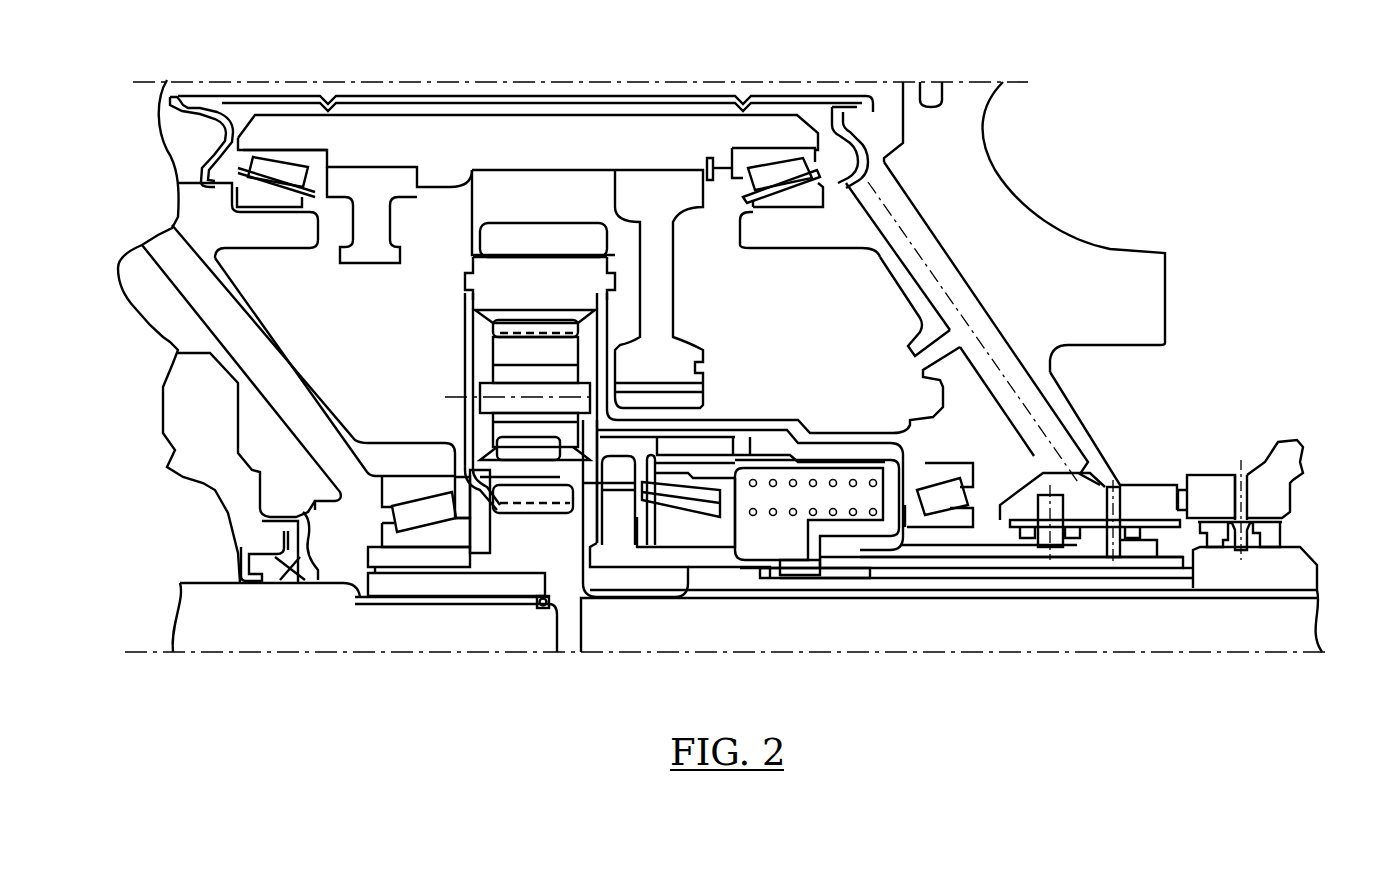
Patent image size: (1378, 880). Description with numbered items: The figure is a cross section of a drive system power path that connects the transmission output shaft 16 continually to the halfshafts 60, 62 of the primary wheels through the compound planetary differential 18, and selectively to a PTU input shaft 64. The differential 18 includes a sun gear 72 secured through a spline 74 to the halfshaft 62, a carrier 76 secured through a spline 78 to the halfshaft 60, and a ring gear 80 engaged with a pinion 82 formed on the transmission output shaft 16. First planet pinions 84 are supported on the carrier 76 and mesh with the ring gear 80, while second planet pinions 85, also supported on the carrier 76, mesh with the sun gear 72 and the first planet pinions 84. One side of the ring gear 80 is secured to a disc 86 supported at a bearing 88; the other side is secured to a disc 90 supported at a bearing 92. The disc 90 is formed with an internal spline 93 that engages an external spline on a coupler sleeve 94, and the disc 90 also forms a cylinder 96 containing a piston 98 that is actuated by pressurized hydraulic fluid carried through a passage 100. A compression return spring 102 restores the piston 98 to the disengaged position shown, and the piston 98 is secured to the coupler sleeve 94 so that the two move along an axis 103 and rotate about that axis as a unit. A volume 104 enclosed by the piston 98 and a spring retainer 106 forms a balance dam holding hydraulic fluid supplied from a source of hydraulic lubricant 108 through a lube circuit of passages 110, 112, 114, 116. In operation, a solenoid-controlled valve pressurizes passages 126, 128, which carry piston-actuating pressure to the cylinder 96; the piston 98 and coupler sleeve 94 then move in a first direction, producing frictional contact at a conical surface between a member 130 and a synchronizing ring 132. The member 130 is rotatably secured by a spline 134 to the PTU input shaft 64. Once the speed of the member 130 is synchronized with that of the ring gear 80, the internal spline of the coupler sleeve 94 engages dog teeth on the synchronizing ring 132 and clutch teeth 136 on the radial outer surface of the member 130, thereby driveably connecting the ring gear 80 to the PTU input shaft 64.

The transmission output shaft 16 is at (561, 192).
The compound planetary differential 18 is at (406, 379).
The halfshaft 60 is at (1237, 627).
The halfshaft 62 is at (290, 627).
The PTU input shaft 64 is at (1183, 578).
The sun gear 72 is at (533, 565).
The spline 74 is at (421, 590).
The carrier 76 is at (587, 577).
The spline 78 is at (625, 548).
The ring gear 80 is at (561, 294).
The pinion 82 is at (472, 236).
The first planet pinions 84 is at (560, 350).
The second planet pinions 85 is at (453, 470).
The disc 86 is at (470, 337).
The bearing 88 is at (418, 520).
The disc 90 is at (600, 355).
The bearing 92 is at (942, 500).
The internal spline 93 is at (635, 428).
The coupler sleeve 94 is at (766, 452).
The cylinder 96 is at (824, 440).
The piston 98 is at (836, 467).
The passage 100 is at (1040, 550).
The compression return spring 102 is at (847, 530).
The axis 103 is at (222, 654).
The volume 104 is at (852, 530).
The spring retainer 106 is at (797, 515).
The source of hydraulic lubricant 108 is at (890, 128).
The passage 110 is at (1068, 438).
The passage 112 is at (1137, 550).
The passage 114 is at (1100, 550).
The passage 116 is at (818, 550).
The passage 126 is at (1058, 492).
The passage 128 is at (1020, 553).
The member 130 is at (640, 563).
The synchronizing ring 132 is at (685, 483).
The spline 134 is at (722, 572).
The clutch teeth 136 is at (613, 462).